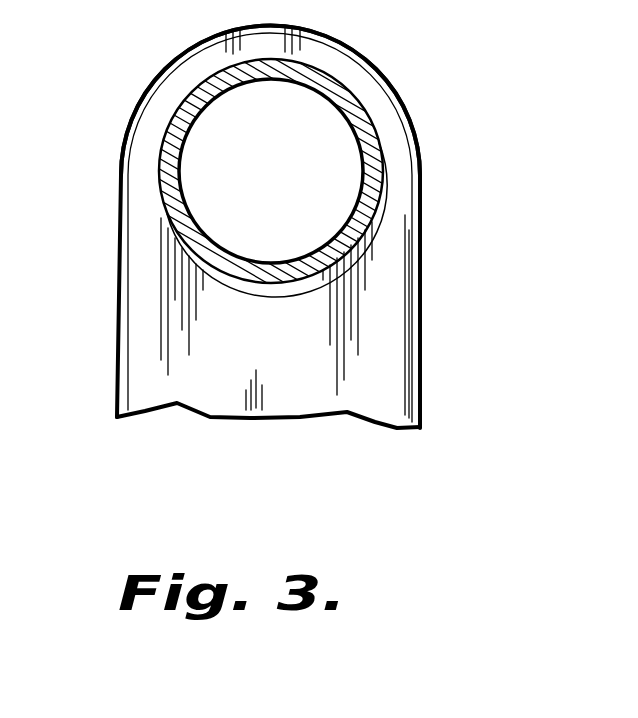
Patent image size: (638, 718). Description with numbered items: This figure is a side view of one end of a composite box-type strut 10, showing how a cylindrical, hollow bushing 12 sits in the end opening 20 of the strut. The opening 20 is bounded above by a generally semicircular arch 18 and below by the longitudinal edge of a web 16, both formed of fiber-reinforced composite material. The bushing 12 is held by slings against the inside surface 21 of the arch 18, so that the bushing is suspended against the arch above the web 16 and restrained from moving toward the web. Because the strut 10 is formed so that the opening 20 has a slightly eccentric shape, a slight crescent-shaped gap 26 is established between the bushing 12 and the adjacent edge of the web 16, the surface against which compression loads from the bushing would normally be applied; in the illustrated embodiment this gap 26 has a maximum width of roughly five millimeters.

The box-type strut 10 is at (467, 312).
The bushing 12 is at (370, 158).
The web 16 is at (378, 373).
The arch 18 is at (377, 74).
The opening 20 is at (248, 297).
The inside surface 21 is at (178, 108).
The gap 26 is at (231, 280).